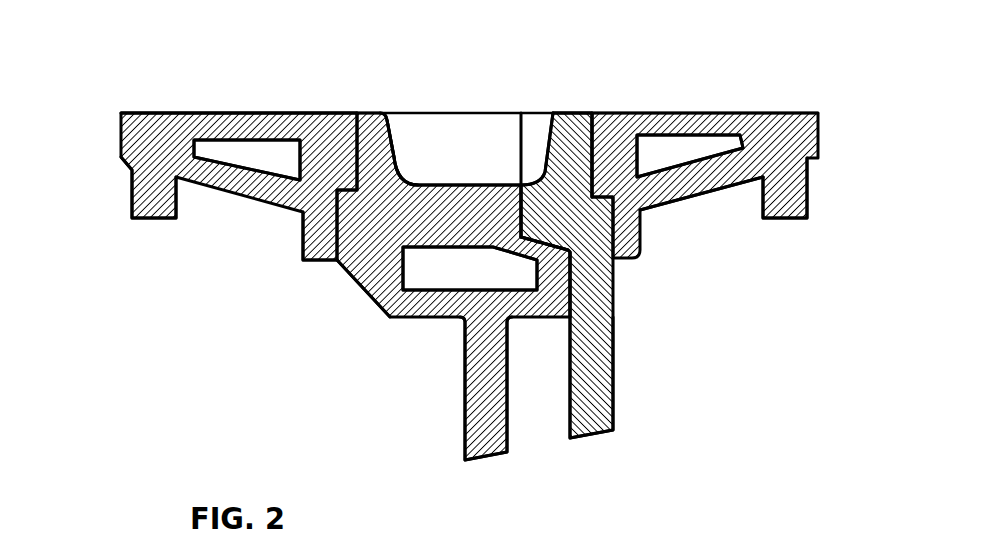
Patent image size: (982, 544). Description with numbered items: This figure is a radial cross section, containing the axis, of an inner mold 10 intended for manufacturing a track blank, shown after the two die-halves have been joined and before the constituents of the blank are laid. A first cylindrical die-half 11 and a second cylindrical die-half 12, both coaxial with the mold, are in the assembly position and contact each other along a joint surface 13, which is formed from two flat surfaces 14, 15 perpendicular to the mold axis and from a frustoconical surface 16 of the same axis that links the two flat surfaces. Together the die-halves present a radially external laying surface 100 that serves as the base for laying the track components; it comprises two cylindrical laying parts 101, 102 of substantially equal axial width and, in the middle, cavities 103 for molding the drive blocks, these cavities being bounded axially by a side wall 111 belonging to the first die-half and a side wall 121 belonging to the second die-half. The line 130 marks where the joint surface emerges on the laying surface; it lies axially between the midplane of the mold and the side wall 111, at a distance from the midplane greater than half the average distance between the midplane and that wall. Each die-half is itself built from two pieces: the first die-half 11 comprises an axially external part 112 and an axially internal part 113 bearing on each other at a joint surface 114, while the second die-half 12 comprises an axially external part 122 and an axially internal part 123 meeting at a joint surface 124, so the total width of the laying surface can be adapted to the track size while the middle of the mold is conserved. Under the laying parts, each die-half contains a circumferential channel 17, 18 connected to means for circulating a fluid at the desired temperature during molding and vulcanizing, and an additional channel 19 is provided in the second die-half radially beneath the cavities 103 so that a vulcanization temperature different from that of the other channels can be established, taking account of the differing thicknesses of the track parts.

The inner mold 10 is at (98, 84).
The laying surface 100 is at (190, 110).
The cylindrical laying part 102 is at (260, 110).
The axially external part 122 is at (160, 220).
The channel 18 is at (252, 150).
The joint surface 124 is at (303, 235).
The second cylindrical die-half 12 is at (347, 273).
The side wall 121 is at (393, 148).
The cavities 103 is at (475, 147).
The axially internal part 123 is at (367, 278).
The additional channel 19 is at (423, 292).
The frustoconical surface 16 is at (465, 377).
The joint surface 13 is at (547, 320).
The first cylindrical die-half 11 is at (617, 372).
The flat surface 14 is at (518, 142).
The line of the joint surface 130 is at (544, 137).
The side wall 111 is at (547, 113).
The flat surface 15 is at (580, 280).
The axially internal part 113 is at (577, 315).
The cylindrical laying part 101 is at (743, 112).
The joint surface 114 is at (592, 167).
The channel 17 is at (675, 145).
The axially external part 112 is at (793, 213).